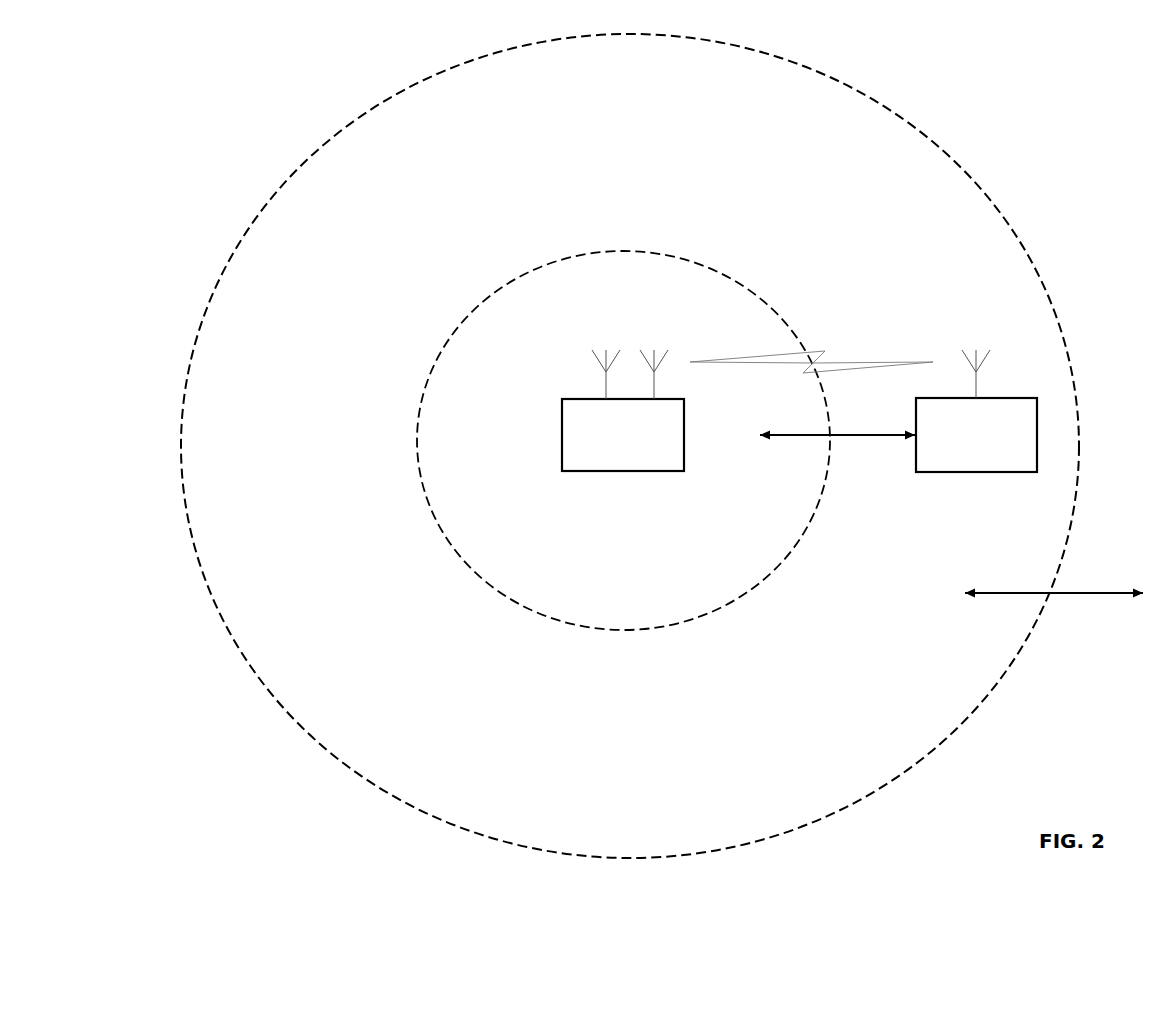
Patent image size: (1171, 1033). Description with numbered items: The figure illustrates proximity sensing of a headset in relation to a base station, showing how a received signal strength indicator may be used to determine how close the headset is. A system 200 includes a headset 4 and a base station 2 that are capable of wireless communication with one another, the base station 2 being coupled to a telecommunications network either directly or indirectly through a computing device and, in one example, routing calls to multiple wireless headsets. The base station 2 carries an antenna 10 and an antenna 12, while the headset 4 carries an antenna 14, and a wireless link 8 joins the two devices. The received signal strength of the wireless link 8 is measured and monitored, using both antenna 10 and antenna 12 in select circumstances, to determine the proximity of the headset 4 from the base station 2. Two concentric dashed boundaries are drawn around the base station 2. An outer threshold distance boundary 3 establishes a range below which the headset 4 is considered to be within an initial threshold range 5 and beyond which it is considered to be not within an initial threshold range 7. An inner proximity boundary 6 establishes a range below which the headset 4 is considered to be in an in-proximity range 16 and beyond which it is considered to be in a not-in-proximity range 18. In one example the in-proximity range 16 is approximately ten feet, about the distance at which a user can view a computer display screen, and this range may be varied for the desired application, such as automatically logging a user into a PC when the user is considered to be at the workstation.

The system 200 is at (1073, 76).
The base station 2 is at (623, 435).
The headset 4 is at (976, 435).
The threshold distance boundary 3 is at (960, 723).
The proximity boundary 6 is at (783, 555).
The initial threshold range 5 is at (1026, 632).
The not within initial threshold range 7 is at (1102, 644).
The wireless link 8 is at (811, 351).
The antenna 10 is at (602, 363).
The antenna 12 is at (662, 360).
The antenna 14 is at (983, 360).
The in-proximity range 16 is at (832, 466).
The not-in-proximity range 18 is at (873, 470).